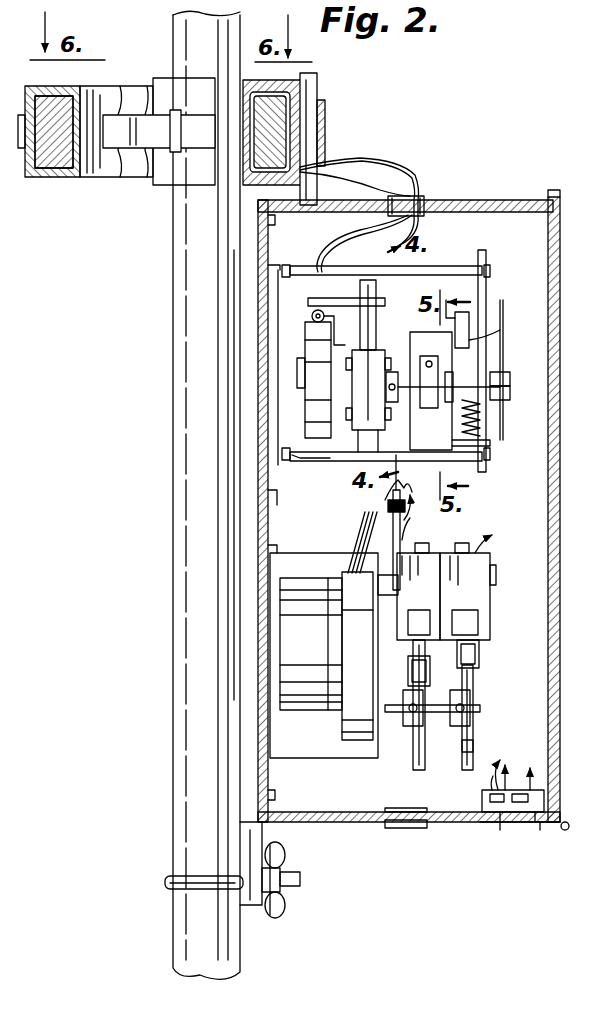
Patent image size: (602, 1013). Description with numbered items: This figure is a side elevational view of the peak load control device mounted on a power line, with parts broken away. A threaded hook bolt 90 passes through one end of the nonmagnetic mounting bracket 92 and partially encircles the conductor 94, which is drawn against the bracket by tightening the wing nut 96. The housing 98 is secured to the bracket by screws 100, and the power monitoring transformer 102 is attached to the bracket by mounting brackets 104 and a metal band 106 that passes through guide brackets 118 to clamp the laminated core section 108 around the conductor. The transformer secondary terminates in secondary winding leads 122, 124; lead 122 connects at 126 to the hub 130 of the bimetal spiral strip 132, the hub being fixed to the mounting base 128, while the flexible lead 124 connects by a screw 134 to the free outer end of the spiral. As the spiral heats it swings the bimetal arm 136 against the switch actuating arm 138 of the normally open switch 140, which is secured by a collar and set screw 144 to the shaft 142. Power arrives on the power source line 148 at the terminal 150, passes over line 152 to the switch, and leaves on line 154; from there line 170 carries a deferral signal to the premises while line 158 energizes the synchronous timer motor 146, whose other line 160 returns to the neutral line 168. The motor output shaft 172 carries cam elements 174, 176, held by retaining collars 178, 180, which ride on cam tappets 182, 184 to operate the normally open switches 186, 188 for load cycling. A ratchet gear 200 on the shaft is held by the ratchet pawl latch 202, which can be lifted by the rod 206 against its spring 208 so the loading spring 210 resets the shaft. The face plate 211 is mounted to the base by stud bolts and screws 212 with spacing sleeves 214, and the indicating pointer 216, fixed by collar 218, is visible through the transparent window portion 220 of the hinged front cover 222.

The threaded hook bolt 90 is at (162, 880).
The mounting bracket 92 is at (255, 928).
The conductor 94 is at (185, 436).
The wing nut 96 is at (292, 852).
The housing 98 is at (472, 825).
The screws 100 is at (282, 216).
The power monitoring transformer 102 is at (78, 192).
The mounting brackets 104 is at (335, 140).
The metal band 106 is at (158, 140).
The laminated core section 108 is at (592, 135).
The guide brackets 118 is at (176, 118).
The secondary winding lead 122 is at (368, 190).
The secondary winding lead 124 is at (405, 164).
The connection point 126 is at (345, 385).
The mounting base 128 is at (290, 328).
The hub 130 is at (300, 462).
The bimetal spiral strip 132 is at (312, 355).
The screw 134 is at (314, 302).
The bimetal arm 136 is at (380, 300).
The switch actuating arm 138 is at (380, 317).
The normally open switch 140 is at (358, 440).
The shaft 142 is at (378, 440).
The collar and set screw 144 is at (396, 368).
The timer motor 146 is at (326, 649).
The power source line 148 is at (512, 748).
The terminal 150 is at (510, 826).
The line 152 is at (400, 468).
The line 154 is at (395, 487).
The line 158 is at (366, 536).
The line 160 is at (362, 520).
The neutral line 168 is at (488, 776).
The line 170 is at (410, 512).
The output shaft 172 is at (392, 715).
The cam element 174 is at (416, 776).
The cam element 176 is at (473, 690).
The retaining collar 178 is at (403, 700).
The retaining collar 180 is at (452, 696).
The cam tappet 182 is at (408, 678).
The cam tappet 184 is at (479, 655).
The normally open switch 186 is at (432, 604).
The normally open switch 188 is at (484, 604).
The ratchet gear 200 is at (492, 450).
The ratchet pawl latch 202 is at (470, 325).
The rod 206 is at (498, 346).
The spring 208 is at (485, 426).
The loading spring 210 is at (452, 405).
The face plate 211 is at (500, 328).
The stud bolts and screws 212 is at (512, 243).
The spacing sleeves 214 is at (434, 266).
The indicating pointer 216 is at (510, 376).
The collar 218 is at (510, 396).
The transparent window portion 220 is at (560, 272).
The hinged front cover 222 is at (560, 530).